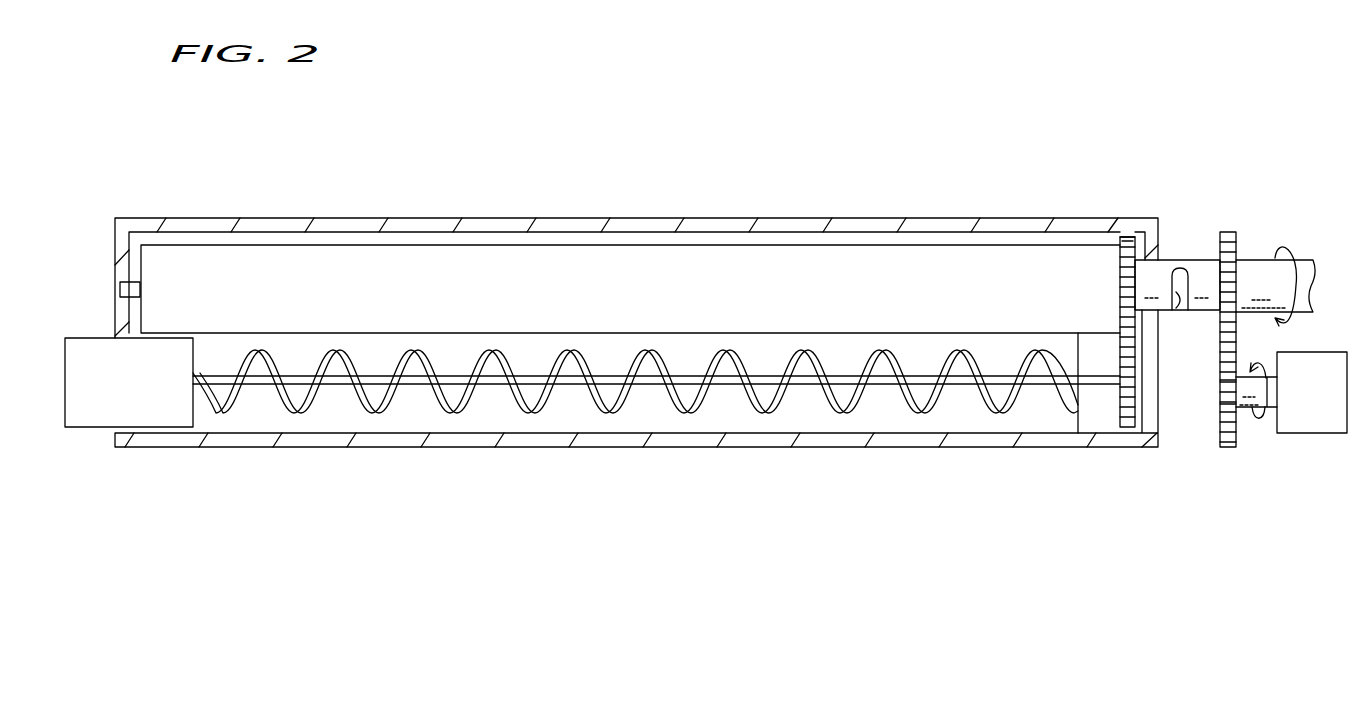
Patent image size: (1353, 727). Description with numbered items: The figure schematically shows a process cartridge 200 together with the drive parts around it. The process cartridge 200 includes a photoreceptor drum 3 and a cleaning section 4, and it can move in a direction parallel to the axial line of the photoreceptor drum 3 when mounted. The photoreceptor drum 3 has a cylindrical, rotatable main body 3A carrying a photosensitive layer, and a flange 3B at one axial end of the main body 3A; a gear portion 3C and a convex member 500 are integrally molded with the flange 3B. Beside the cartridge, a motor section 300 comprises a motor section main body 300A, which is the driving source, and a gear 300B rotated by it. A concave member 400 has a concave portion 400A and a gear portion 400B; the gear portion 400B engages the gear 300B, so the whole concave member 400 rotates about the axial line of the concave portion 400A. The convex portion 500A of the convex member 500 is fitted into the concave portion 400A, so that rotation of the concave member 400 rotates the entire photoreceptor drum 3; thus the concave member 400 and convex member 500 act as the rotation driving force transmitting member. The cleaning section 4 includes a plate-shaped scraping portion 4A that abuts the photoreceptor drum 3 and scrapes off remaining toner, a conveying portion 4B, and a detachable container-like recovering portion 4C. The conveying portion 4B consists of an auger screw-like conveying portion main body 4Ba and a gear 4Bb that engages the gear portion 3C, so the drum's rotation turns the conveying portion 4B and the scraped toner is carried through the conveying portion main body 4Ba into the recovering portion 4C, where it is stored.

The process cartridge 200 is at (994, 56).
The photoreceptor drum 3 is at (847, 133).
The main body 3A is at (260, 260).
The flange 3B is at (1156, 182).
The gear portion 3C is at (1138, 230).
The cleaning section 4 is at (694, 511).
The scraping portion 4A is at (1033, 415).
The conveying portion 4B is at (478, 415).
The conveying portion main body 4Ba is at (585, 385).
The gear 4Bb is at (1126, 430).
The recovering portion 4C is at (88, 414).
The motor section 300 is at (1281, 529).
The motor section main body 300A is at (1315, 420).
The gear 300B is at (1230, 447).
The concave member 400 is at (1284, 153).
The concave portion 400A is at (1203, 268).
The gear portion 400B is at (1236, 232).
The convex member 500 is at (1180, 239).
The convex portion 500A is at (1186, 312).